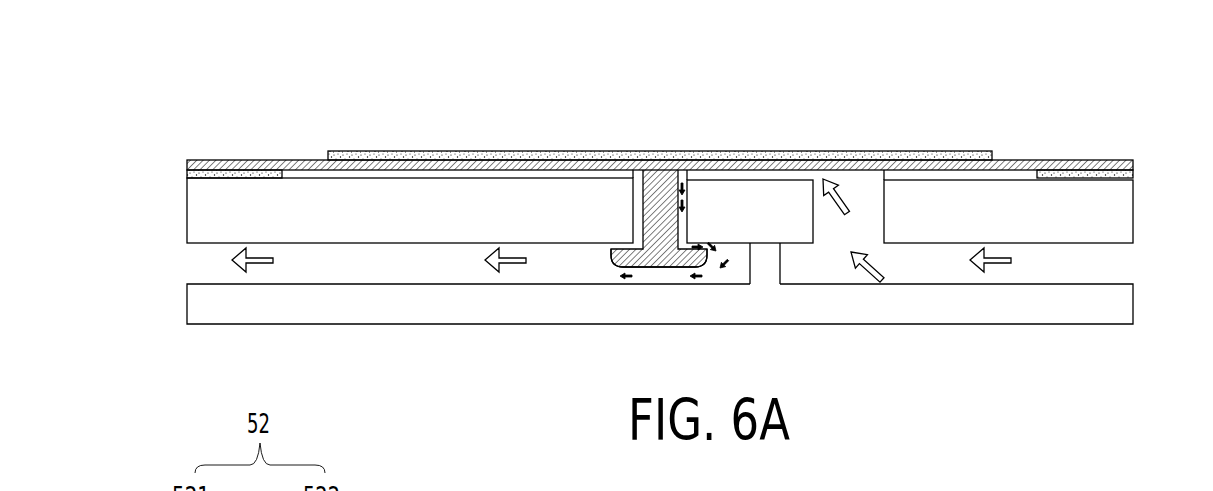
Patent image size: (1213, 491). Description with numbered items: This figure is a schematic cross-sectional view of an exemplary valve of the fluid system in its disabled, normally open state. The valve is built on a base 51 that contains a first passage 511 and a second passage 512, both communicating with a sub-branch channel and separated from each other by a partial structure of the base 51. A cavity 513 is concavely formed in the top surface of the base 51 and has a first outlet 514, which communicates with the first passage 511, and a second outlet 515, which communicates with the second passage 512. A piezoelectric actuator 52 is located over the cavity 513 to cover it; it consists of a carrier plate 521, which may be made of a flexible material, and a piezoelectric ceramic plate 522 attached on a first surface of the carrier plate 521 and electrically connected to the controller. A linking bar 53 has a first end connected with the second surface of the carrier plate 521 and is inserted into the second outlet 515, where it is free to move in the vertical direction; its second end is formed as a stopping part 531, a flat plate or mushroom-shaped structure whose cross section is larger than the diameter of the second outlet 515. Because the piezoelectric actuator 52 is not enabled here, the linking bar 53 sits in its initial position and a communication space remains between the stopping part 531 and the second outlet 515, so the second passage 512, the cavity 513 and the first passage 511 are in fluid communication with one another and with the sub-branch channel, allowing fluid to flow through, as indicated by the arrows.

The base 51 is at (1113, 203).
The first passage 511 is at (1122, 269).
The second passage 512 is at (203, 269).
The cavity 513 is at (765, 177).
The first outlet 514 is at (867, 197).
The second outlet 515 is at (648, 151).
The piezoelectric actuator 52 is at (355, 97).
The carrier plate 521 is at (276, 160).
The piezoelectric ceramic plate 522 is at (410, 152).
The linking bar 53 is at (643, 205).
The stopping part 531 is at (627, 265).